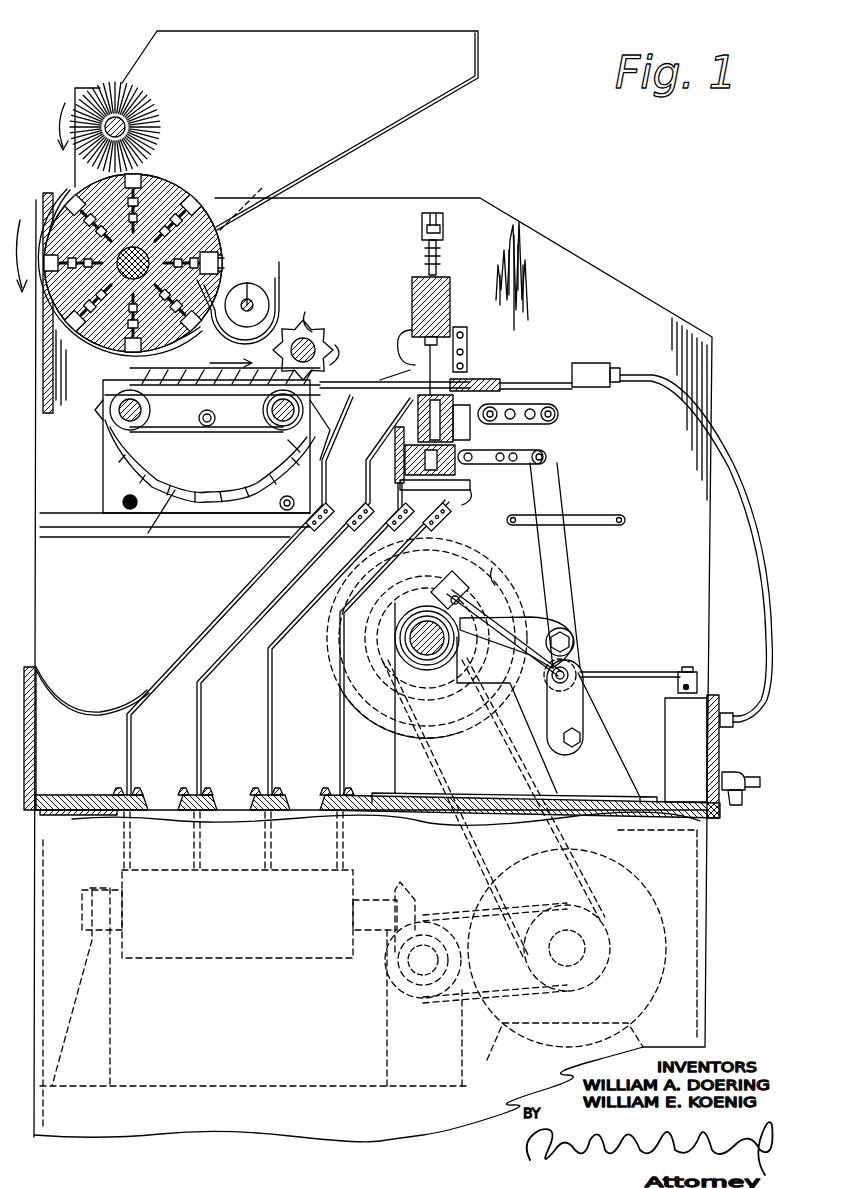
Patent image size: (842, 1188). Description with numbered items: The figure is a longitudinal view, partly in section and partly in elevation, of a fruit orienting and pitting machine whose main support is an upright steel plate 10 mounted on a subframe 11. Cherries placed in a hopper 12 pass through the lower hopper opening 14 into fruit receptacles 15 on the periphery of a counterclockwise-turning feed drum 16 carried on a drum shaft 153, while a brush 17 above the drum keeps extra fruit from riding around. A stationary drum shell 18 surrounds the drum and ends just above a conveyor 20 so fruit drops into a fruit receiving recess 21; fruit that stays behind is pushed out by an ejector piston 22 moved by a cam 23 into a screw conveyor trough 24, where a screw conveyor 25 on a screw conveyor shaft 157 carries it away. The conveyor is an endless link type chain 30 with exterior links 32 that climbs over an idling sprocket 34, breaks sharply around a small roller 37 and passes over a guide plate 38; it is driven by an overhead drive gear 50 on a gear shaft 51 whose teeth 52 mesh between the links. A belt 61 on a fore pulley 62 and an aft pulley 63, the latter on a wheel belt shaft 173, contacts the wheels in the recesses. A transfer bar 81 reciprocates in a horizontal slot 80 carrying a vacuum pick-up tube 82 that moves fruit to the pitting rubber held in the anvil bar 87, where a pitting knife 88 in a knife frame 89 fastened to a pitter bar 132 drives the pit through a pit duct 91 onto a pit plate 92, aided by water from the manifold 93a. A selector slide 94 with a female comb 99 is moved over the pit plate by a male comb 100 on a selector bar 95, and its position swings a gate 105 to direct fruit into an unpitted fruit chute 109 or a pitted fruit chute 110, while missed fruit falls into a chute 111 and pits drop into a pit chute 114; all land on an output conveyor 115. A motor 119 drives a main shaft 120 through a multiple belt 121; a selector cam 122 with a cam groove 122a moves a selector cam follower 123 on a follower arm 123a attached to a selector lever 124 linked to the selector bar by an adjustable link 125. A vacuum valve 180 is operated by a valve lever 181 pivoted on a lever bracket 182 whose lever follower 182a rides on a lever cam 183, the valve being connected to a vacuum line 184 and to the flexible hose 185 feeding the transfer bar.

The upright steel plate 10 is at (597, 321).
The subframe 11 is at (707, 875).
The hopper 12 is at (307, 87).
The lower hopper opening 14 is at (190, 179).
The fruit receptacle 15 is at (140, 175).
The feed drum 16 is at (200, 215).
The brush 17 is at (145, 110).
The stationary drum shell 18 is at (42, 300).
The conveyor 20 is at (215, 468).
The fruit receiving recess 21 is at (112, 388).
The ejector piston 22 is at (220, 262).
The cam 23 is at (248, 201).
The screw conveyor trough 24 is at (282, 290).
The screw conveyor 25 is at (279, 262).
The endless link type chain 30 is at (156, 524).
The exterior link 32 is at (208, 380).
The idling sprocket 34 is at (103, 410).
The small roller 37 is at (340, 410).
The guide plate 38 is at (324, 430).
The overhead drive gear 50 is at (347, 334).
The gear shaft 51 is at (305, 312).
The teeth 52 is at (338, 358).
The belt 61 is at (270, 432).
The fore pulley 62 is at (150, 412).
The aft pulley 63 is at (265, 412).
The horizontal slot 80 is at (380, 382).
The transfer bar 81 is at (495, 380).
The vacuum pick-up tube 82 is at (467, 360).
The anvil bar 87 is at (470, 380).
The pitting knife 88 is at (410, 330).
The knife frame 89 is at (450, 300).
The pit duct 91 is at (455, 438).
The pit plate 92 is at (458, 470).
The manifold 93a is at (470, 418).
The selector slide 94 is at (395, 470).
The selector bar 95 is at (480, 455).
The female comb 99 is at (462, 505).
The male comb 100 is at (405, 490).
The gate 105 is at (383, 410).
The unpitted fruit chute 109 is at (226, 650).
The pitted fruit chute 110 is at (305, 596).
The chute for unpicked-up fruit 111 is at (92, 691).
The pit chute 114 is at (358, 639).
The output conveyor 115 is at (230, 920).
The motor 119 is at (700, 941).
The main shaft 120 is at (420, 650).
The multiple belt 121 is at (560, 775).
The selector cam 122 is at (497, 572).
The cam groove 122a is at (466, 548).
The selector cam follower 123 is at (565, 600).
The follower arm 123a is at (572, 602).
The selector lever 124 is at (570, 553).
The adjustable link 125 is at (535, 452).
The pitter bar 132 is at (443, 238).
The drum shaft 153 is at (71, 367).
The screw conveyor shaft 157 is at (240, 290).
The wheel belt shaft 173 is at (285, 440).
The vacuum valve 180 is at (685, 750).
The valve lever 181 is at (600, 672).
The lever bracket 182 is at (590, 740).
The lever follower 182a is at (475, 565).
The lever cam 183 is at (455, 730).
The vacuum line 184 is at (745, 797).
The air line / flexible hose 185 is at (742, 472).